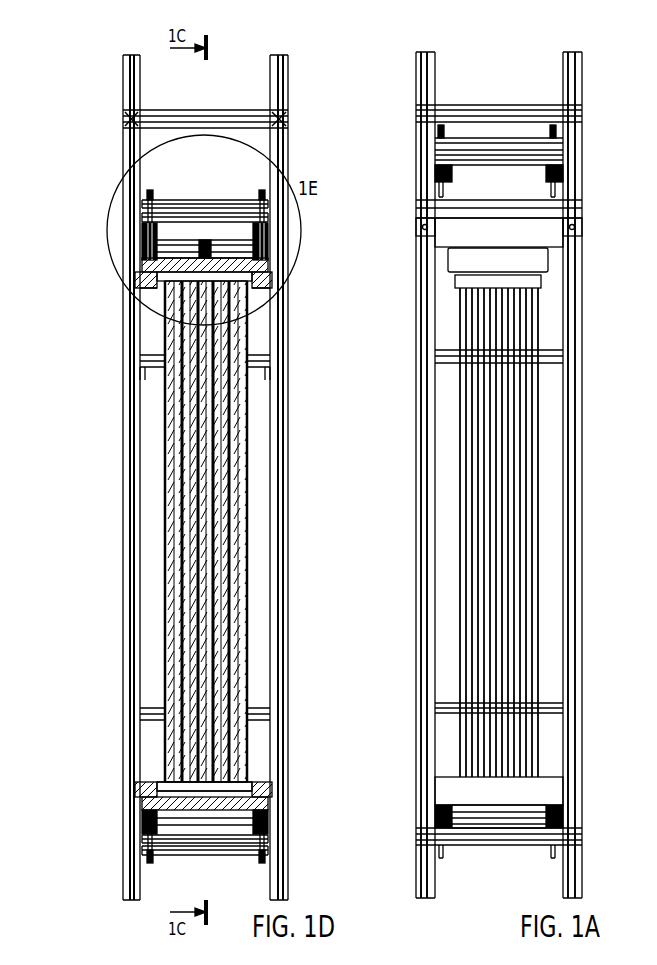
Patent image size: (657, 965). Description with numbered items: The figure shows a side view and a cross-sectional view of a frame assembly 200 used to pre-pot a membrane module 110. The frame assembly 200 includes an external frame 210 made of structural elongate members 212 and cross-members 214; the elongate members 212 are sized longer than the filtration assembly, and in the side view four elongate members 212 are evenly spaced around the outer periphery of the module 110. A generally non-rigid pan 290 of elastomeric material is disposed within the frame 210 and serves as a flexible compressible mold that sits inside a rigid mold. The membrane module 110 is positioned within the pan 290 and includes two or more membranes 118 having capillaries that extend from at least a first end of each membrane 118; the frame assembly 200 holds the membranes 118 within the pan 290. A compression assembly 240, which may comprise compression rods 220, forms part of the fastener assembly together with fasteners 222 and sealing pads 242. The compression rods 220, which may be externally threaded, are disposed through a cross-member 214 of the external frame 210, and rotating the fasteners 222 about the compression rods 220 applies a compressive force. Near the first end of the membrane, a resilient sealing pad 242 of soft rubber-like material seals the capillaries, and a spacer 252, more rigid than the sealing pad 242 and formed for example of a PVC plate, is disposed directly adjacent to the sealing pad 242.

In FIG. 1D, the membrane module 110 is at (240, 580).
In FIG. 1A, the membrane module 110 is at (499, 532).
In FIG. 1D, the membrane 118 is at (240, 668).
In FIG. 1D, the frame assembly 200 is at (290, 98).
In FIG. 1D, the external frame 210 is at (283, 463).
In FIG. 1A, the external frame 210 is at (563, 583).
In FIG. 1D, the elongate member 212 is at (283, 345).
In FIG. 1A, the elongate member 212 is at (563, 482).
In FIG. 1D, the cross-member 214 is at (258, 264).
In FIG. 1A, the cross-member 214 is at (557, 806).
In FIG. 1D, the compression rod 220 is at (152, 198).
In FIG. 1A, the compression rod 220 is at (445, 858).
In FIG. 1D, the fastener 222 is at (165, 208).
In FIG. 1A, the fastener 222 is at (445, 848).
In FIG. 1D, the compression assembly 240 is at (122, 205).
In FIG. 1D, the sealing pad 242 is at (141, 289).
In FIG. 1D, the spacer 252 is at (150, 275).
In FIG. 1A, the spacer 252 is at (557, 790).
In FIG. 1D, the pan 290 is at (255, 790).